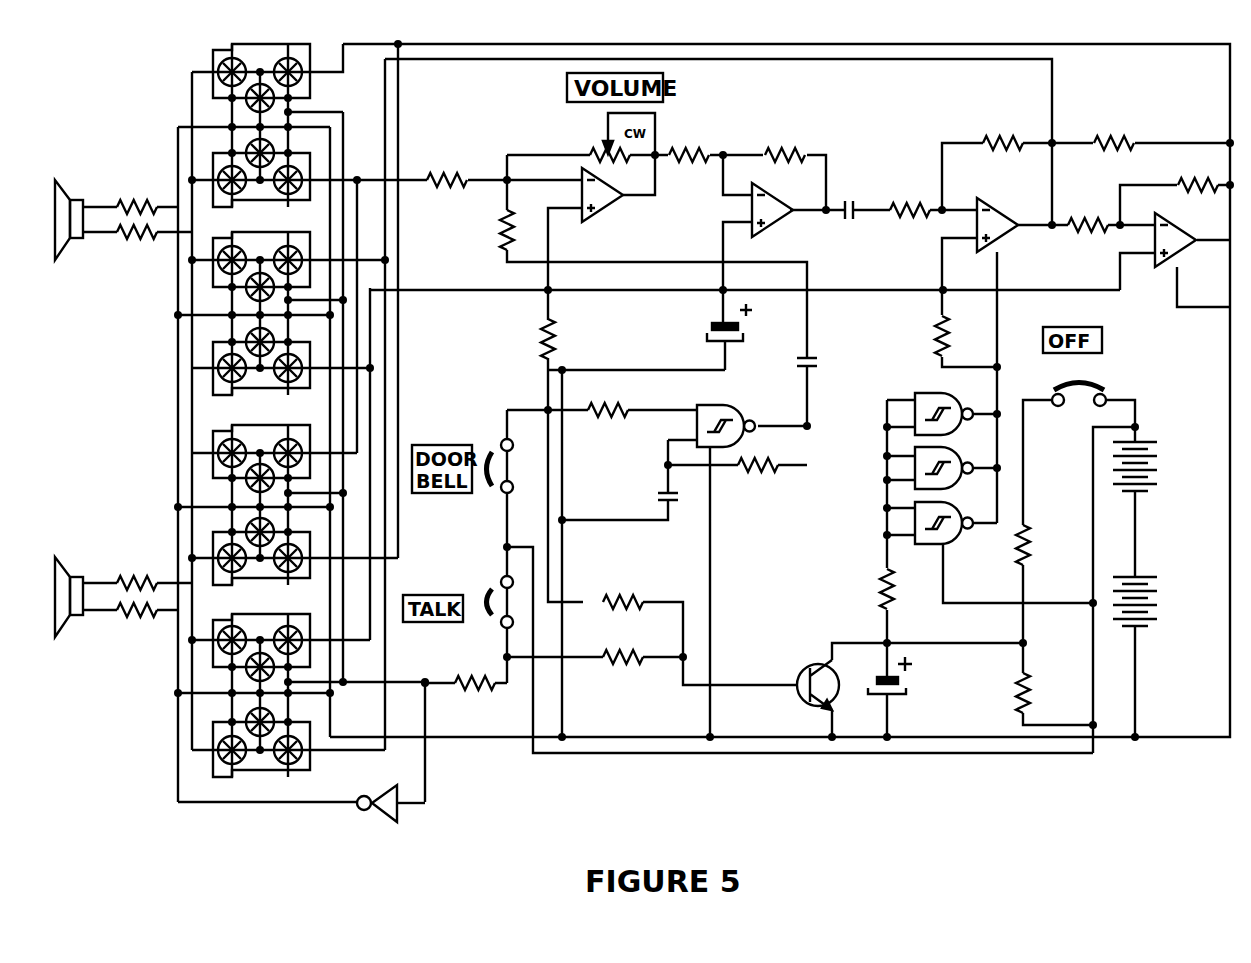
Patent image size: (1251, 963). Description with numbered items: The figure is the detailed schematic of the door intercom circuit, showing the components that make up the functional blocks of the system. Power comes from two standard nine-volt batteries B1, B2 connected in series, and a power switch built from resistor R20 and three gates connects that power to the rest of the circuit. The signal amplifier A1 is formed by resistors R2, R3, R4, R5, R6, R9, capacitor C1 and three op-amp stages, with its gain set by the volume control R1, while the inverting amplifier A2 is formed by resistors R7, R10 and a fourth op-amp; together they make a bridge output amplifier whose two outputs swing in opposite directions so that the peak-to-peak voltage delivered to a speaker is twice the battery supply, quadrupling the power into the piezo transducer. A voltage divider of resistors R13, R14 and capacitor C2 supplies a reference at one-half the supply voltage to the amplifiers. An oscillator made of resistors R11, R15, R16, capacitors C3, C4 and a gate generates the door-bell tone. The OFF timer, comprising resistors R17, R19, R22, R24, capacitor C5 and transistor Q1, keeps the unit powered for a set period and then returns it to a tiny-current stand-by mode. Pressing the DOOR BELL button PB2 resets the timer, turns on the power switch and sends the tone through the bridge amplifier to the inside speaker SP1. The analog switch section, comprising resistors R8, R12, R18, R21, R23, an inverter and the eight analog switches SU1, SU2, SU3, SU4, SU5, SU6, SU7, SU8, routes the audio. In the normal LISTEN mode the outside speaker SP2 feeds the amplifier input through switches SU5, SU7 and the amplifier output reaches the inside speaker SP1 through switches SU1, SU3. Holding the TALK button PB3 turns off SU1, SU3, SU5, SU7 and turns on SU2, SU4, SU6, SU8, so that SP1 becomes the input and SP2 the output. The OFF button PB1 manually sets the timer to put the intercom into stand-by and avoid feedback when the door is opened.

The inside speaker SP1 is at (69, 238).
The outside speaker SP2 is at (69, 613).
The volume control R1 is at (593, 134).
The resistor R2 is at (1003, 140).
The resistor R3 is at (1114, 142).
The resistor R4 is at (689, 156).
The resistor R5 is at (785, 156).
The resistor R6 is at (447, 158).
The resistor R7 is at (1198, 188).
The resistor R8 is at (137, 189).
The resistor R9 is at (906, 210).
The resistor R10 is at (1088, 226).
The resistor R11 is at (484, 230).
The resistor R12 is at (137, 255).
The resistor R13 is at (918, 336).
The resistor R14 is at (569, 339).
The resistor R15 is at (606, 413).
The resistor R16 is at (764, 471).
The resistor R17 is at (1041, 543).
The resistor R18 is at (137, 565).
The resistor R19 is at (625, 582).
The resistor R20 is at (856, 589).
The resistor R21 is at (137, 633).
The resistor R22 is at (625, 656).
The resistor R23 is at (473, 682).
The resistor R24 is at (1045, 693).
The capacitor C1 is at (846, 211).
The capacitor C2 is at (711, 337).
The capacitor C3 is at (822, 364).
The capacitor C4 is at (645, 494).
The capacitor C5 is at (909, 689).
The transistor Q1 is at (818, 679).
The 9 volt battery B1 is at (1147, 456).
The 9 volt battery B2 is at (1147, 594).
The OFF push-button PB1 is at (1079, 384).
The DOOR BELL push-button PB2 is at (482, 456).
The TALK push-button PB3 is at (479, 592).
The analog switch SU1 is at (261, 69).
The analog switch SU2 is at (261, 182).
The analog switch SU3 is at (261, 258).
The analog switch SU4 is at (261, 371).
The analog switch SU5 is at (261, 448).
The analog switch SU6 is at (261, 560).
The analog switch SU7 is at (261, 637).
The analog switch SU8 is at (261, 750).